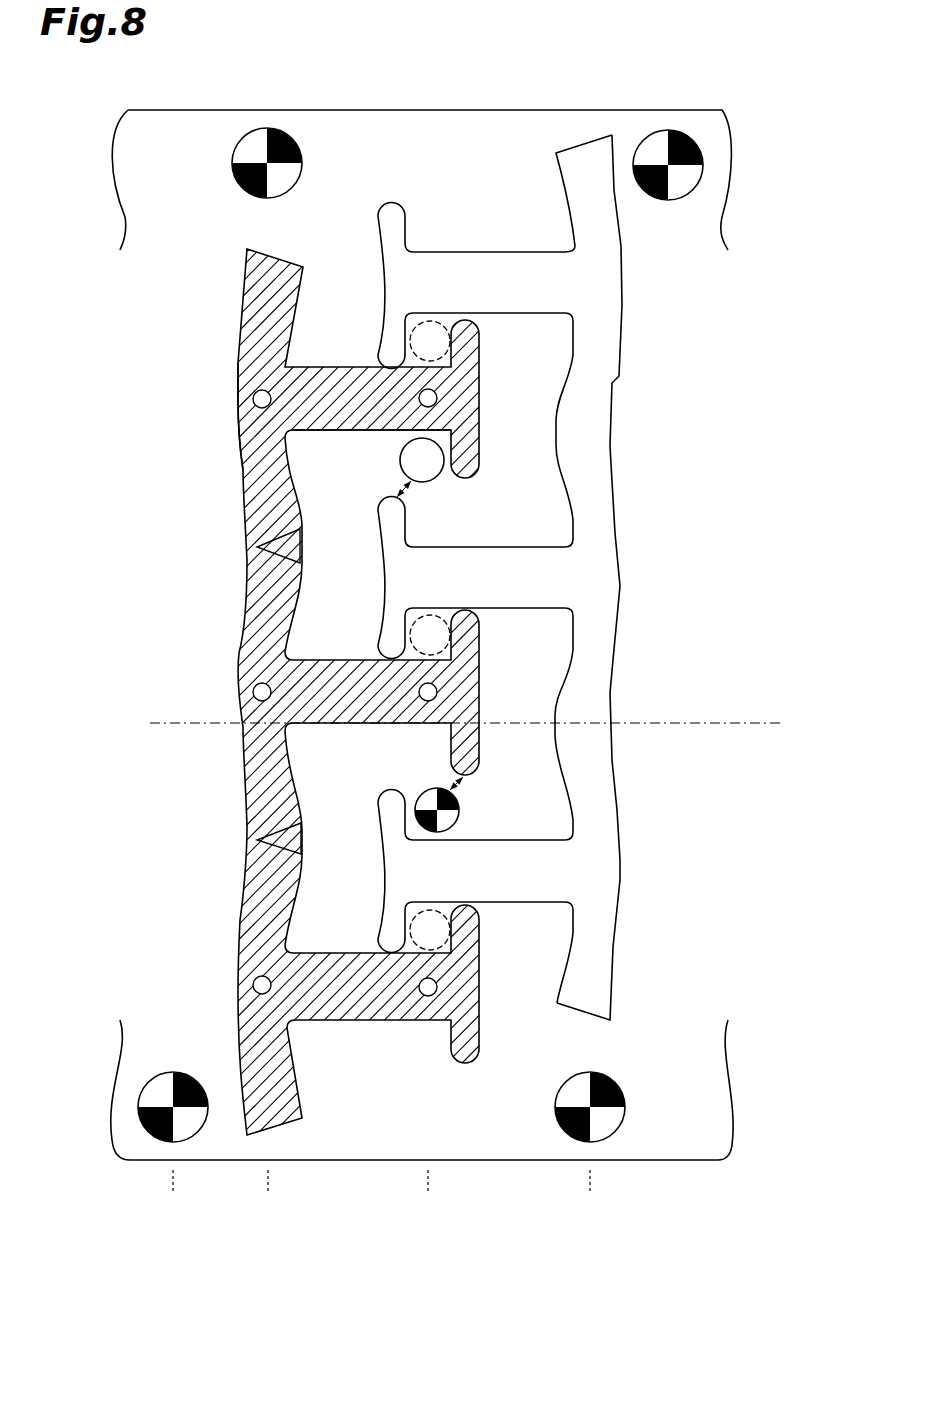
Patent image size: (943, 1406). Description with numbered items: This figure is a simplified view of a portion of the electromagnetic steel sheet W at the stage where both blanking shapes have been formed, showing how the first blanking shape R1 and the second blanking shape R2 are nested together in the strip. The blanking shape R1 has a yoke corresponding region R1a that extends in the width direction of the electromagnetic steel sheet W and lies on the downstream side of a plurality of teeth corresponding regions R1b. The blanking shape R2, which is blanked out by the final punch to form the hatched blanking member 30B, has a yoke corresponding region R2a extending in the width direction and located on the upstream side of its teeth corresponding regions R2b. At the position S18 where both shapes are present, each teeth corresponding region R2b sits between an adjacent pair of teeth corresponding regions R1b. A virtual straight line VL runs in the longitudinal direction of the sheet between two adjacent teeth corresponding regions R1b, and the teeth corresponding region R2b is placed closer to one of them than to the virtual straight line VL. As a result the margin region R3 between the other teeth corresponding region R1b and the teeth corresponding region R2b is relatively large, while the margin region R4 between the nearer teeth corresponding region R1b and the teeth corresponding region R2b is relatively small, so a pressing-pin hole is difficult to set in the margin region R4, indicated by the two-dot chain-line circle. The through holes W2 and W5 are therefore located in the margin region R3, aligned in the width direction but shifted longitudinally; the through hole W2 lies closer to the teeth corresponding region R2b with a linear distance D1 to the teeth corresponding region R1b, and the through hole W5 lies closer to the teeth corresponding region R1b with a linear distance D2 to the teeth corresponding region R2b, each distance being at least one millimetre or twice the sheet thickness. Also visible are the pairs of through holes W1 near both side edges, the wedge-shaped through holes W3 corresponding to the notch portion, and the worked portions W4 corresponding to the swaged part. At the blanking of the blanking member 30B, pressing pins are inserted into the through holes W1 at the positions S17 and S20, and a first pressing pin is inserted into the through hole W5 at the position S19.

The electromagnetic steel sheet W is at (688, 111).
The through hole W1 is at (253, 132).
The through hole W2 is at (402, 464).
The through hole W3 is at (267, 567).
The worked portion W4 is at (253, 399).
The through hole W5 is at (428, 792).
The blanking shape R1 is at (530, 524).
The yoke corresponding region R1a is at (574, 243).
The teeth corresponding region R1b is at (478, 252).
The blanking shape R2 is at (281, 433).
The yoke corresponding region R2a is at (243, 463).
The teeth corresponding region R2b is at (340, 430).
The margin region R3 is at (472, 507).
The margin region R4 is at (450, 613).
The blanking member 30B is at (253, 343).
The linear distance D1 is at (410, 488).
The linear distance D2 is at (465, 782).
The virtual straight line VL is at (722, 735).
The position S17 is at (175, 1197).
The position S18 is at (269, 1197).
The position S19 is at (431, 1197).
The position S20 is at (593, 1197).